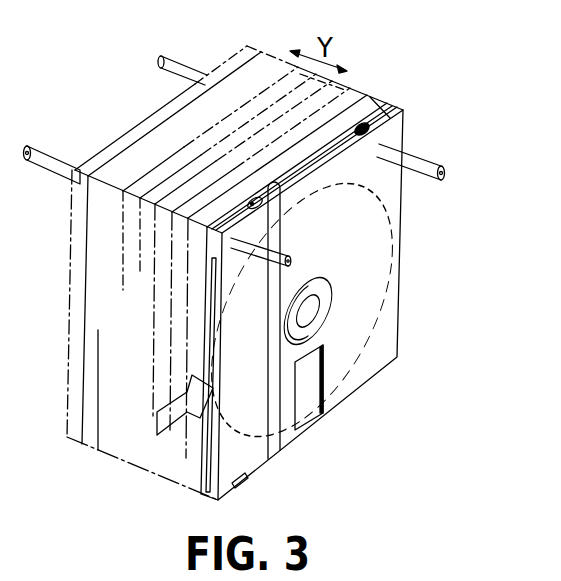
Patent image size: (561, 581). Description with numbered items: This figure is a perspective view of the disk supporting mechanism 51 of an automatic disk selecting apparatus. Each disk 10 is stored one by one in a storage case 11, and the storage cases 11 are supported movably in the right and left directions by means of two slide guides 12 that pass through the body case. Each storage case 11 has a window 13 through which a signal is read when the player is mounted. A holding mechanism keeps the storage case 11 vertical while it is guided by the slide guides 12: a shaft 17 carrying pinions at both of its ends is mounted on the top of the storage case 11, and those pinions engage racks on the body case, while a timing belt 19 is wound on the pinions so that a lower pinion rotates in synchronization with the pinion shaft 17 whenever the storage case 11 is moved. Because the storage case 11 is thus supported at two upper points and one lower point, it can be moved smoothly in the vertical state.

The disk 10 is at (392, 310).
The storage case 11 is at (397, 357).
The slide guide 12 is at (66, 164).
The window 13 is at (312, 382).
The shaft 17 is at (372, 143).
The timing belt 19 is at (273, 425).
The disk supporting mechanism 51 is at (425, 106).